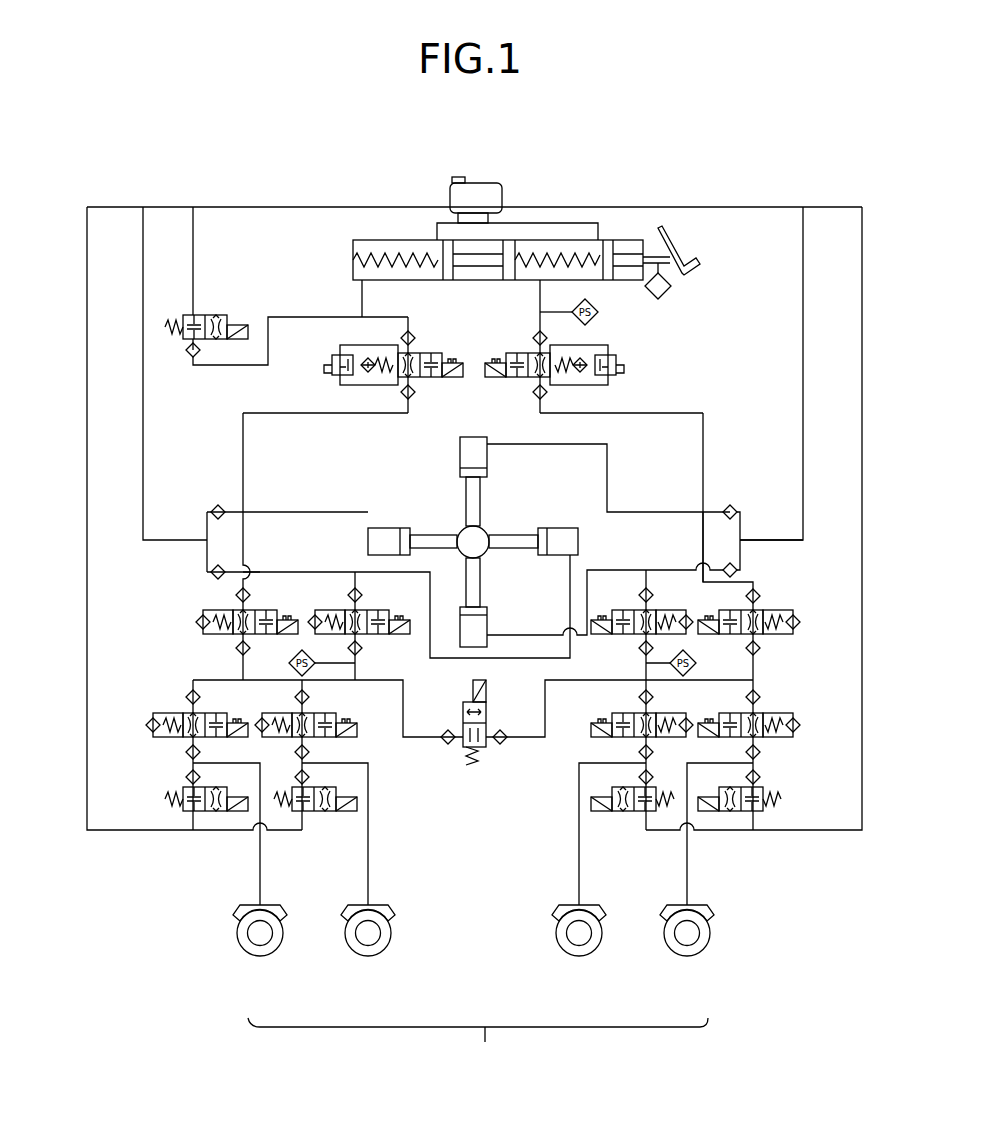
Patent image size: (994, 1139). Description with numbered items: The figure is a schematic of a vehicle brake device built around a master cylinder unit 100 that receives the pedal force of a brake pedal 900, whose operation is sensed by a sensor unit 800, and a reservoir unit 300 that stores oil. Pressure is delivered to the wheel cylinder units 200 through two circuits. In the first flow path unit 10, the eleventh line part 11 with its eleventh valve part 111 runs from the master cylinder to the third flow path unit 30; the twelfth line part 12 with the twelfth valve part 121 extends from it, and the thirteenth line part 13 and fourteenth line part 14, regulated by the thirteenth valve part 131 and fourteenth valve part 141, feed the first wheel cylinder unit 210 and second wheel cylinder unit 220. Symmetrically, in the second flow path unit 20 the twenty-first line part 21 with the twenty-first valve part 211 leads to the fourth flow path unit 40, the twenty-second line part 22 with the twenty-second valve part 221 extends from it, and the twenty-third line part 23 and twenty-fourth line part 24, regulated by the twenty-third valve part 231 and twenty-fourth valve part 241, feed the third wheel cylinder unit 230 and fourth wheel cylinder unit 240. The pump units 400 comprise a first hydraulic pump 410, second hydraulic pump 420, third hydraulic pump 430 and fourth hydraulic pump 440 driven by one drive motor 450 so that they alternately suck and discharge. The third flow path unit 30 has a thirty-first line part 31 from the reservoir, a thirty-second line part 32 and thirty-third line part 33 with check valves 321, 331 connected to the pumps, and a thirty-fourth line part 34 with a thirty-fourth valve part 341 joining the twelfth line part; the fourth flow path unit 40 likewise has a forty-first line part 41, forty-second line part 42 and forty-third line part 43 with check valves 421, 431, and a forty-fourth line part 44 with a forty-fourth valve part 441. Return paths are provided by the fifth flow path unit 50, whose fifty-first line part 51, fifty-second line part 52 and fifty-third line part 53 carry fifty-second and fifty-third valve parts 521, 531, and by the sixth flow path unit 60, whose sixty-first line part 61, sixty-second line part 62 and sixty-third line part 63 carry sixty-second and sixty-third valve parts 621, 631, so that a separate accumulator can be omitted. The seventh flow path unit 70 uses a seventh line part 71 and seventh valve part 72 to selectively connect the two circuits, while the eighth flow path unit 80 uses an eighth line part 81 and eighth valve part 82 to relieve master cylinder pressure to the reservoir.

The master cylinder unit 100 is at (380, 240).
The reservoir unit 300 is at (487, 179).
The brake pedal 900 is at (674, 238).
The sensor unit 800 is at (668, 296).
The eighth flow path unit 80 is at (258, 240).
The eighth line part 81 is at (195, 243).
The eighth valve part 82 is at (206, 315).
The twenty-first valve part 211 is at (415, 353).
The eleventh valve part 111 is at (502, 378).
The second flow path unit 20 is at (283, 408).
The first flow path unit 10 is at (652, 408).
The twenty-first line part 21 is at (243, 451).
The eleventh line part 11 is at (703, 448).
The twelfth line part 12 is at (703, 537).
The twenty-second line part 22 is at (243, 545).
The third flow path unit 30 is at (800, 545).
The thirty-first line part 31 is at (803, 378).
The thirty-second line part 32 is at (607, 478).
The thirty-third line part 33 is at (603, 570).
The thirty-fourth line part 34 is at (646, 663).
The check valve 321 is at (733, 507).
The check valve 331 is at (737, 570).
The thirty-fourth valve part 341 is at (632, 608).
The fourth flow path unit 40 is at (160, 550).
The forty-first line part 41 is at (143, 378).
The forty-second line part 42 is at (318, 512).
The forty-third line part 43 is at (325, 572).
The forty-fourth line part 44 is at (355, 665).
The check valve 421 is at (218, 505).
The check valve 431 is at (212, 574).
The forty-fourth valve part 441 is at (360, 608).
The pump units 400 is at (437, 484).
The first hydraulic pump 410 is at (489, 456).
The second hydraulic pump 420 is at (489, 618).
The third hydraulic pump 430 is at (388, 527).
The fourth hydraulic pump 440 is at (563, 527).
The drive motor 450 is at (489, 530).
The twenty-second valve part 221 is at (210, 633).
The twelfth valve part 121 is at (715, 637).
The twenty-third valve part 231 is at (200, 712).
The twenty-fourth valve part 241 is at (305, 712).
The fourteenth valve part 141 is at (608, 712).
The thirteenth valve part 131 is at (762, 712).
The fifth flow path unit 50 is at (805, 850).
The fifty-first line part 51 is at (862, 616).
The fifty-second line part 52 is at (760, 815).
The fifty-third line part 53 is at (646, 833).
The fifty-second valve part 521 is at (760, 786).
The fifty-third valve part 531 is at (622, 810).
The sixth flow path unit 60 is at (145, 850).
The sixty-first line part 61 is at (87, 616).
The sixty-second line part 62 is at (185, 812).
The sixty-third line part 63 is at (302, 820).
The sixty-second valve part 621 is at (186, 786).
The sixty-third valve part 631 is at (320, 785).
The seventh flow path unit 70 is at (477, 770).
The seventh line part 71 is at (518, 742).
The seventh valve part 72 is at (460, 750).
The thirteenth line part 13 is at (687, 878).
The fourteenth line part 14 is at (579, 878).
The twenty-third line part 23 is at (260, 866).
The twenty-fourth line part 24 is at (368, 860).
The wheel cylinder units 200 is at (478, 1043).
The first wheel cylinder unit 210 is at (689, 956).
The second wheel cylinder unit 220 is at (581, 956).
The third wheel cylinder unit 230 is at (262, 956).
The fourth wheel cylinder unit 240 is at (370, 956).